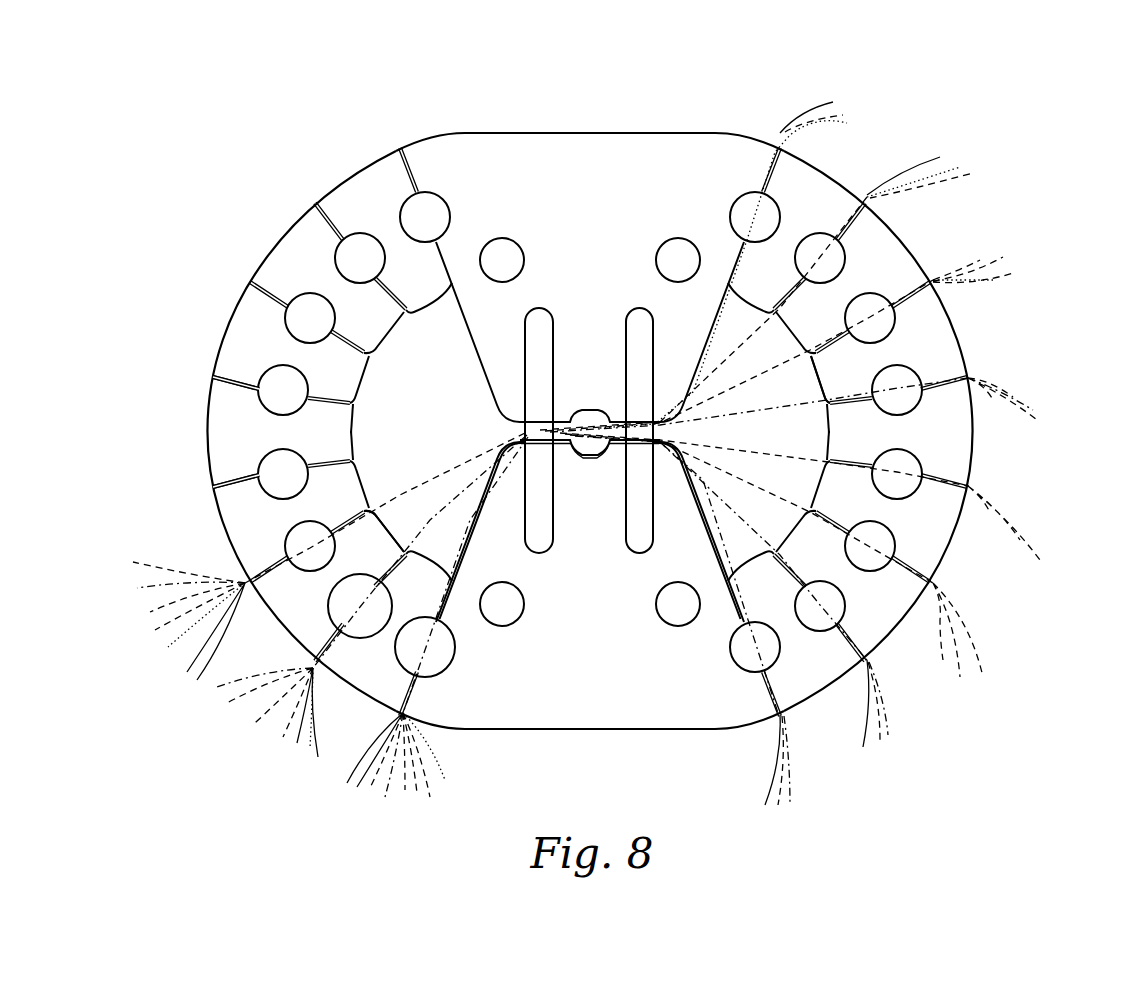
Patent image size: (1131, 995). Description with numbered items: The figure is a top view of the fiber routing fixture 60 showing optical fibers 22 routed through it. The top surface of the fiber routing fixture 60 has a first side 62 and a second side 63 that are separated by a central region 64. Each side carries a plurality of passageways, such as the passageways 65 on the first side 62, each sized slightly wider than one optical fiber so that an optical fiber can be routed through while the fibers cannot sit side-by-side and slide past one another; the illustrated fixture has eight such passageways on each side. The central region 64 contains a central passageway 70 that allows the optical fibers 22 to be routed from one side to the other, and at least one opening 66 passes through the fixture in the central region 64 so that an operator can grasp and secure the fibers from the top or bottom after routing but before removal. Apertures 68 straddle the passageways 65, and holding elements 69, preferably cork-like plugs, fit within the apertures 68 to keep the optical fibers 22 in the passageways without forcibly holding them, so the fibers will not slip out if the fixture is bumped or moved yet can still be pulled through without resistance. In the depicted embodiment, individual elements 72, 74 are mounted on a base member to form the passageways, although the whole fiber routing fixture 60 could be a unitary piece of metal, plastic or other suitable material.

The fiber routing fixture 60 is at (627, 439).
The first side 62 is at (326, 425).
The second side 63 is at (700, 493).
The central region 64 is at (497, 120).
The passageways 65 is at (214, 377).
The opening 66 is at (640, 318).
The apertures 68 is at (360, 248).
The holding elements 69 is at (440, 650).
The central passageway 70 is at (494, 431).
The individual elements 72 is at (942, 354).
The individual elements 74 is at (592, 731).
The optical fibers 22 is at (963, 677).